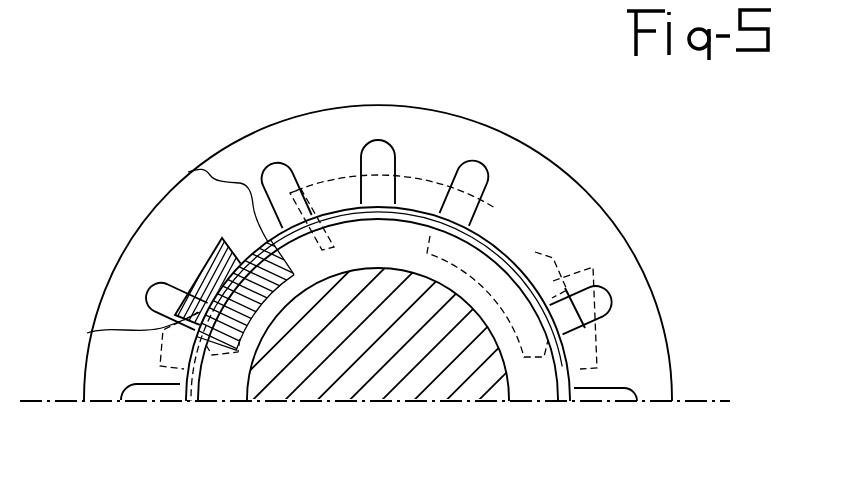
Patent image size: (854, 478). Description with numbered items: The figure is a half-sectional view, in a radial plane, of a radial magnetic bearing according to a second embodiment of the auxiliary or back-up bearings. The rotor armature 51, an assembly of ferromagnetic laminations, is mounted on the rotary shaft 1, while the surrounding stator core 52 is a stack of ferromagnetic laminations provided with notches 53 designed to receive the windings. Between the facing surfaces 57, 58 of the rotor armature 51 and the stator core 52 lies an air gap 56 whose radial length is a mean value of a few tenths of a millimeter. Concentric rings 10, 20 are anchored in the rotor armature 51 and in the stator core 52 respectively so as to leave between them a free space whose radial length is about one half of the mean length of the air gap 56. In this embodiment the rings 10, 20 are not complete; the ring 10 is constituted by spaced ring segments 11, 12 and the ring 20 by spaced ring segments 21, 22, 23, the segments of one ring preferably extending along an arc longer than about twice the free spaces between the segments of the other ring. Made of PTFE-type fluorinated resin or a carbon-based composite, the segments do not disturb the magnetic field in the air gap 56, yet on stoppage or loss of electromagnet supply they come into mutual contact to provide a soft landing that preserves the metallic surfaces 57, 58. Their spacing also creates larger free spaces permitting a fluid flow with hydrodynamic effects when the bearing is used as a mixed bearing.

The rotary shaft 1 is at (373, 389).
The ring 10 is at (220, 370).
The ring segment 11 is at (250, 292).
The ring segment 12 is at (515, 252).
The ring 20 is at (178, 277).
The ring segment 21 is at (221, 254).
The ring segment 22 is at (327, 197).
The ring segment 23 is at (580, 274).
The rotor armature 51 is at (524, 390).
The stator core 52 is at (498, 147).
The notches 53 is at (466, 168).
The air gap 56 is at (567, 408).
The surface 57 is at (407, 220).
The surface 58 is at (493, 236).